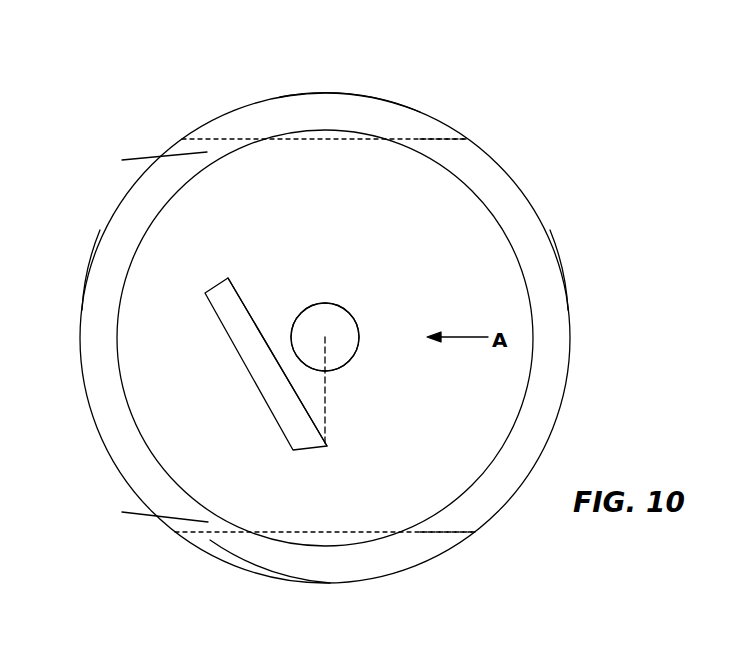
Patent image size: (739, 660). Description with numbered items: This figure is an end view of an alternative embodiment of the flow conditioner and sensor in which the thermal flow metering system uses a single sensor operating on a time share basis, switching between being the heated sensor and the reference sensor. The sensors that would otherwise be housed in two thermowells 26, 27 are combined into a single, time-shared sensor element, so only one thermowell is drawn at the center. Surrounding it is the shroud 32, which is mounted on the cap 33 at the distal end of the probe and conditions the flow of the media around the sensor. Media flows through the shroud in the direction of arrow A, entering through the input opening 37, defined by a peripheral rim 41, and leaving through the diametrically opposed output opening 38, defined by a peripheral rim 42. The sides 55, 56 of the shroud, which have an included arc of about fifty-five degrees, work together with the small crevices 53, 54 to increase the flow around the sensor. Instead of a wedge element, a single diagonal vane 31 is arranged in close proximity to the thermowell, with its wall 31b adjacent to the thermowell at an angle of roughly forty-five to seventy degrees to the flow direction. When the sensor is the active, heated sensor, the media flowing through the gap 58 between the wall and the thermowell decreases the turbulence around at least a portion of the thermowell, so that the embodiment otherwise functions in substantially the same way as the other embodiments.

The thermowell 26 is at (344, 306).
The thermowell 27 is at (370, 323).
The vane 31 is at (258, 369).
The wall 31b is at (245, 300).
The shroud 32 is at (378, 565).
The cap 33 is at (470, 256).
The input opening 37 is at (538, 238).
The output opening 38 is at (115, 240).
The peripheral rim 41 is at (447, 124).
The peripheral rim 42 is at (208, 137).
The crevice 53 is at (148, 515).
The crevice 54 is at (148, 162).
The side 55 is at (276, 567).
The side 56 is at (380, 107).
The gap 58 is at (292, 367).